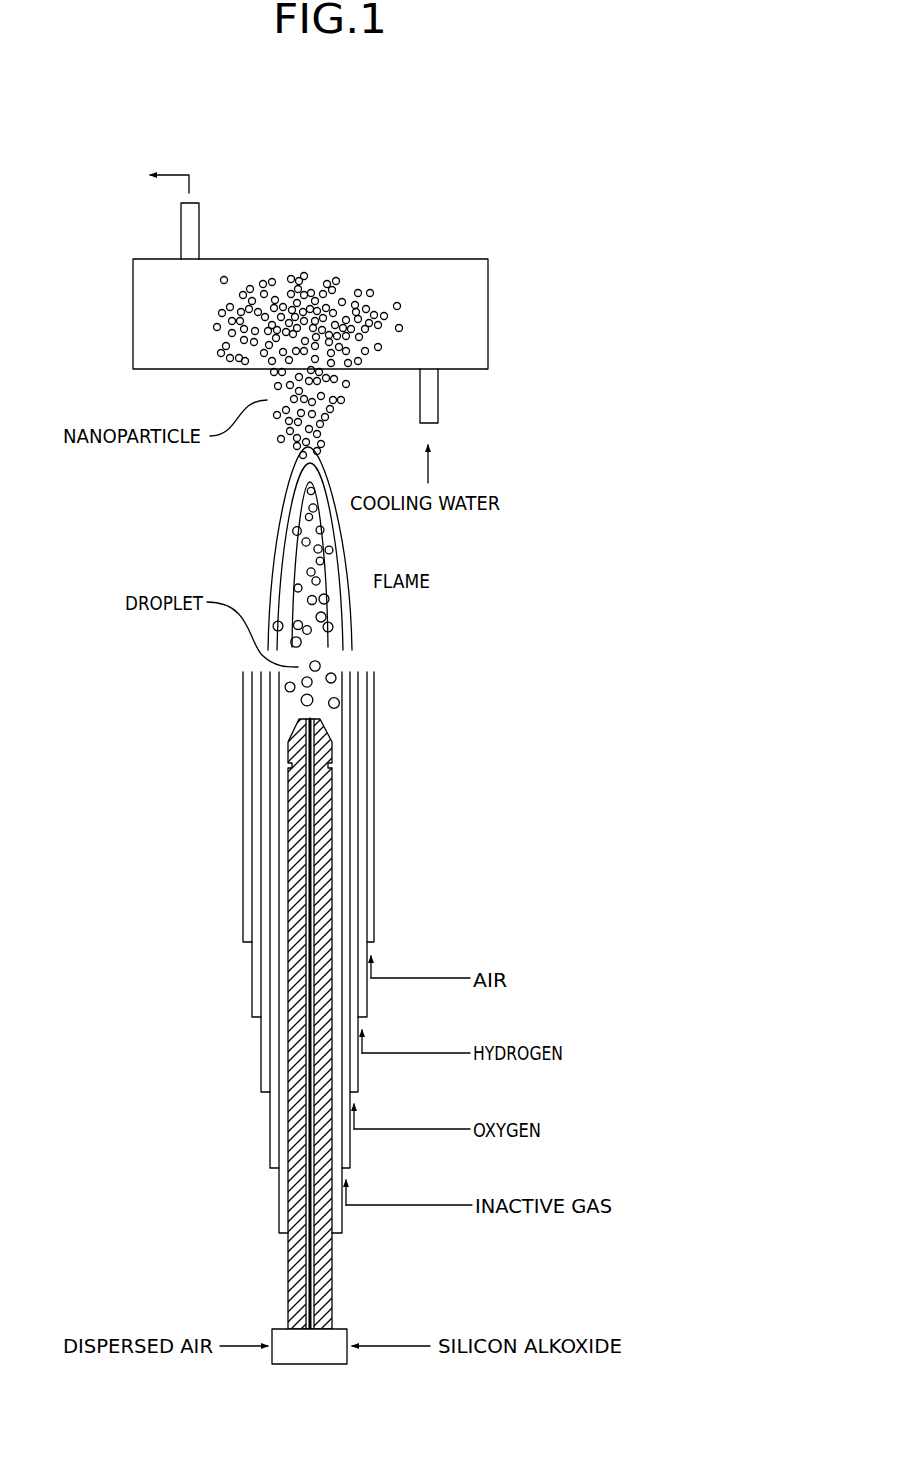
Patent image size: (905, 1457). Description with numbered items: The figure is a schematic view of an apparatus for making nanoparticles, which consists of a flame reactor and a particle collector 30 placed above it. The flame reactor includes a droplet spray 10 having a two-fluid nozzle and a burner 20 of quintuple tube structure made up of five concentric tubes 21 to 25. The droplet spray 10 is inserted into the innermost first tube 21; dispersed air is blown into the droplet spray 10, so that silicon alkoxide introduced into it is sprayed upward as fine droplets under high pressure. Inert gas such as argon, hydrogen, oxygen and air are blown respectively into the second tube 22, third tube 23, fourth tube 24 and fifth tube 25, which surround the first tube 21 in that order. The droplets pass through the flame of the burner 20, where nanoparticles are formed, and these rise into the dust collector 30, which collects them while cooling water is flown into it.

The droplet spray 10 is at (293, 706).
The burner 20 is at (230, 952).
The first tube 21 is at (142, 893).
The second tube 22 is at (270, 1132).
The third tube 23 is at (261, 1058).
The fourth tube 24 is at (252, 983).
The fifth tube 25 is at (243, 908).
The particle collector 30 is at (143, 311).